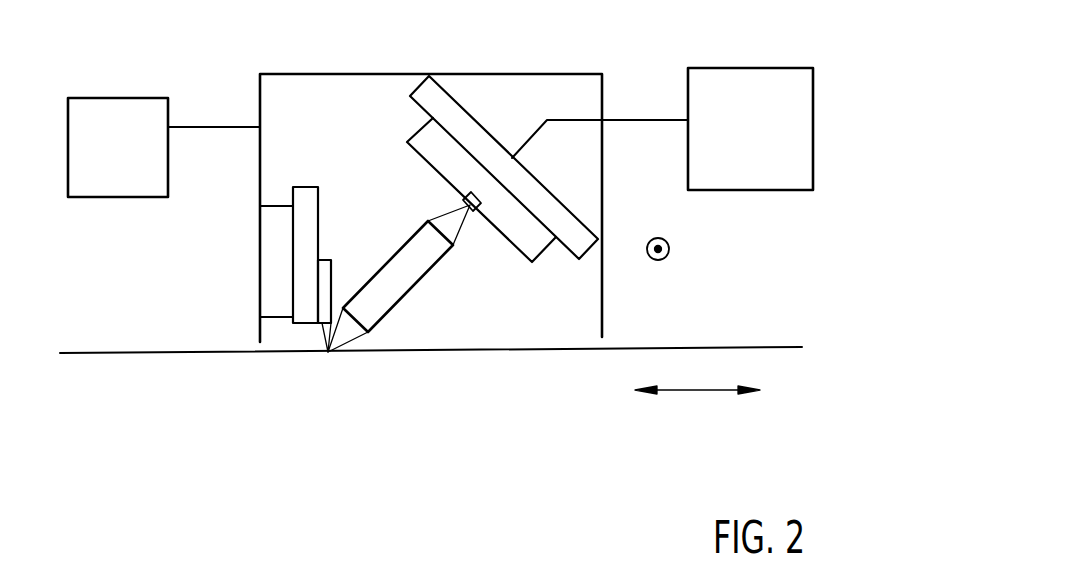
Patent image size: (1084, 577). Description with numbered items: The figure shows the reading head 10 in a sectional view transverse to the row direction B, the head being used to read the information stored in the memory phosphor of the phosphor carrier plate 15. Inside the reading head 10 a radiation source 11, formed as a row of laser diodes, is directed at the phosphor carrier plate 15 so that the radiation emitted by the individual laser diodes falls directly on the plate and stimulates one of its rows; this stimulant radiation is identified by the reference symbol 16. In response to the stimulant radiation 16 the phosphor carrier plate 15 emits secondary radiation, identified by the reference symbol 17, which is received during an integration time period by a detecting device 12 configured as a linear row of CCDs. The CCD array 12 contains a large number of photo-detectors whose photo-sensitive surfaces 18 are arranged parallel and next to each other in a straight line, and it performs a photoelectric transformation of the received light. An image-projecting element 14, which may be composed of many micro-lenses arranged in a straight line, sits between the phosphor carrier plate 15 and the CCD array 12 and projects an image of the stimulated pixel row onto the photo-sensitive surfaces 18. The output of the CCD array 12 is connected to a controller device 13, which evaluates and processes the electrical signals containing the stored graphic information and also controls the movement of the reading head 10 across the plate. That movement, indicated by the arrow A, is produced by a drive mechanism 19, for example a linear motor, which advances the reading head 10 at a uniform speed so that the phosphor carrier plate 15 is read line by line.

The reading head 10 is at (303, 85).
The radiation source 11 is at (327, 261).
The detecting device 12 is at (540, 263).
The controller device 13 is at (740, 73).
The image-projecting element 14 is at (410, 285).
The phosphor carrier plate 15 is at (713, 347).
The stimulant radiation 16 is at (322, 342).
The secondary radiation 17 is at (455, 232).
The photo-sensitive surfaces 18 is at (463, 200).
The drive mechanism 19 is at (123, 113).
The direction of movement A is at (697, 392).
The row direction B is at (669, 250).